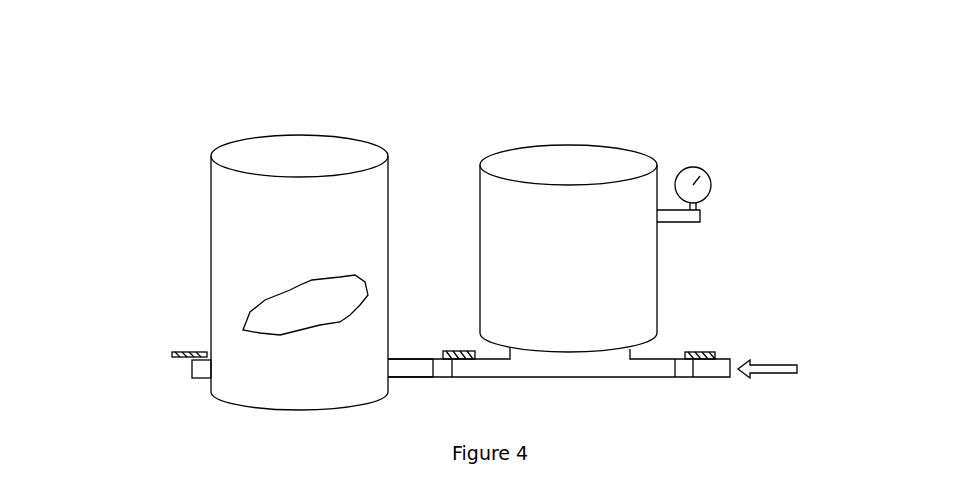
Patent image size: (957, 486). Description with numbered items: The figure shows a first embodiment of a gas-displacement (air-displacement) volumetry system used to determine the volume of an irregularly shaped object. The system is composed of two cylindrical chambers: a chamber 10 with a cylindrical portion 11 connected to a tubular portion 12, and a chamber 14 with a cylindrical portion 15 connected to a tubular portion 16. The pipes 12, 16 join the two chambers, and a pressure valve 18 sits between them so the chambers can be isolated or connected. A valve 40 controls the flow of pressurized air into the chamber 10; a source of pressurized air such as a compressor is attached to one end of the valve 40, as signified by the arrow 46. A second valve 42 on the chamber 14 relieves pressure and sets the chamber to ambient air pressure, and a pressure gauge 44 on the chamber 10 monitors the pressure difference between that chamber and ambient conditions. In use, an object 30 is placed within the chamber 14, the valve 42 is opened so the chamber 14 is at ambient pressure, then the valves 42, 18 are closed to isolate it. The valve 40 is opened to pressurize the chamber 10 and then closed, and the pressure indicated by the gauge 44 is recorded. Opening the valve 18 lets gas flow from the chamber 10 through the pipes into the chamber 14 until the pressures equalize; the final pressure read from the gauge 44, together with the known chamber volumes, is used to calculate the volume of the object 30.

The chamber 10 is at (670, 127).
The cylindrical portion 11 is at (657, 275).
The tubular portion 12 is at (550, 378).
The chamber 14 is at (126, 193).
The cylindrical portion 15 is at (211, 254).
The tubular portion 16 is at (405, 378).
The pressure valve 18 is at (447, 378).
The object 30 is at (245, 322).
The valve 40 is at (690, 378).
The valve 42 is at (198, 378).
The pressure gauge 44 is at (712, 185).
The arrow 46 is at (778, 378).